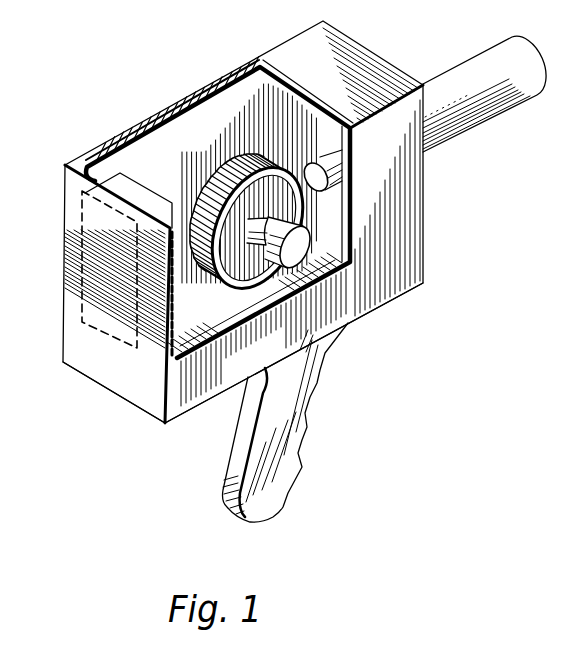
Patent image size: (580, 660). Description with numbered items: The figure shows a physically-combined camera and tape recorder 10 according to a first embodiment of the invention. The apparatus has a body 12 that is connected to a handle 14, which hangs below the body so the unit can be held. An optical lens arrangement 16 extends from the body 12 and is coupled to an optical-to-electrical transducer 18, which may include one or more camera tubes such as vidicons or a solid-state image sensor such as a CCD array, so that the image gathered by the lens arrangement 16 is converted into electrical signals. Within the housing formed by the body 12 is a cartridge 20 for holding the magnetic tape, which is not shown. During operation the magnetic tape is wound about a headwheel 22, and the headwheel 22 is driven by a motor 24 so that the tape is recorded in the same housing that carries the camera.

The combination camera and tape recorder 10 is at (243, 222).
The body 12 is at (147, 414).
The handle 14 is at (288, 496).
The optical lens arrangement 16 is at (487, 124).
The optical-to-electrical transducer 18 is at (320, 156).
The cartridge 20 is at (80, 208).
The headwheel 22 is at (199, 208).
The motor 24 is at (312, 229).